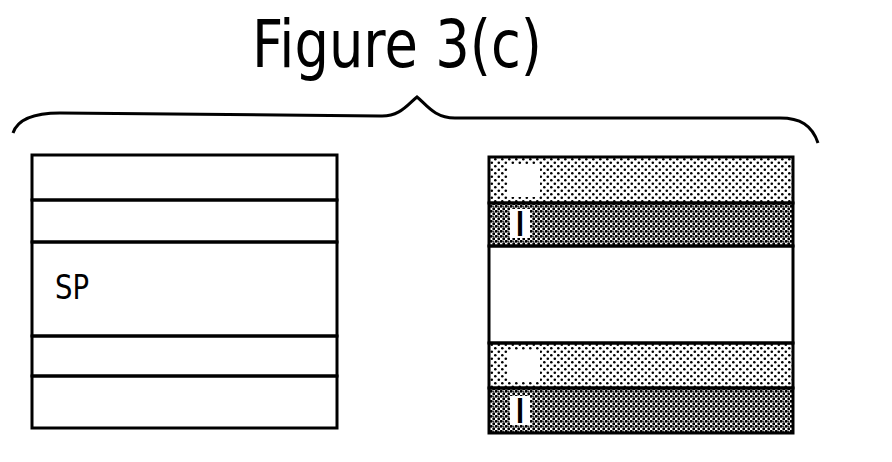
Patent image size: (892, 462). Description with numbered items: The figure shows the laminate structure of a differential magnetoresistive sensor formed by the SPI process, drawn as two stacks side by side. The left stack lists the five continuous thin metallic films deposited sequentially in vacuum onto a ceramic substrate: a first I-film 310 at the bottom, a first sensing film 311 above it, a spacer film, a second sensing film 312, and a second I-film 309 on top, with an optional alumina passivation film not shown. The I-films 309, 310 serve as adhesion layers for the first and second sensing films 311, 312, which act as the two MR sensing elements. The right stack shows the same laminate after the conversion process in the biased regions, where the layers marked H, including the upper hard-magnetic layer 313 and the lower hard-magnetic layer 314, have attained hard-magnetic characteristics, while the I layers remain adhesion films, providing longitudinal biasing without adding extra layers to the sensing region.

The S1 film 311 is at (310, 192).
The I-film 309 is at (310, 236).
The S2 film 312 is at (310, 372).
The I-film 310 is at (310, 418).
The converted hard-magnetic layer 313 is at (768, 198).
The lower hydrophilic (H) / hydrophobic (I) layer pair 314 is at (768, 382).